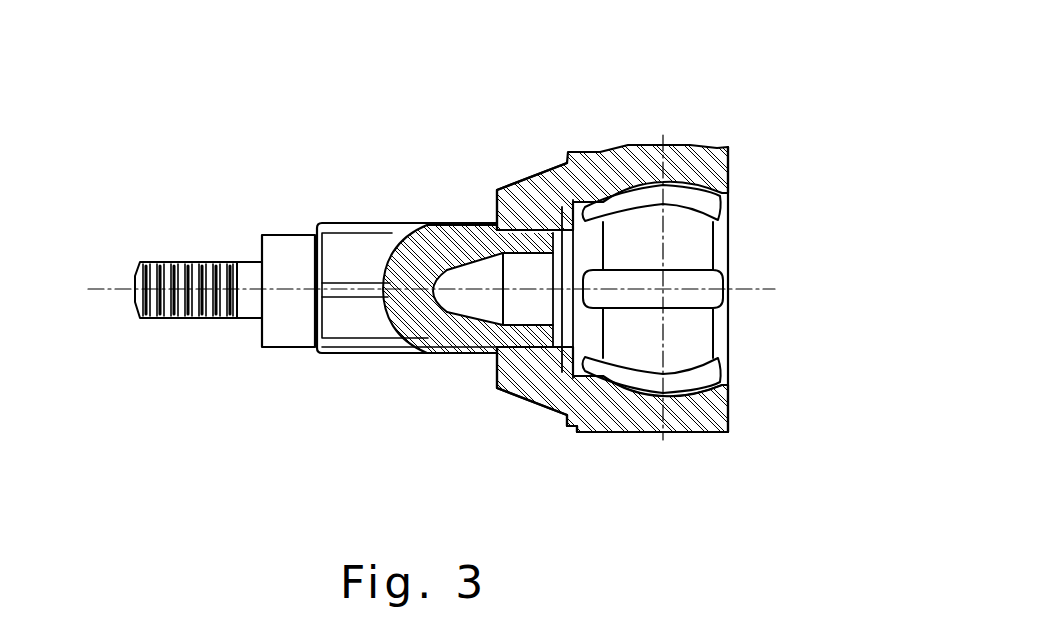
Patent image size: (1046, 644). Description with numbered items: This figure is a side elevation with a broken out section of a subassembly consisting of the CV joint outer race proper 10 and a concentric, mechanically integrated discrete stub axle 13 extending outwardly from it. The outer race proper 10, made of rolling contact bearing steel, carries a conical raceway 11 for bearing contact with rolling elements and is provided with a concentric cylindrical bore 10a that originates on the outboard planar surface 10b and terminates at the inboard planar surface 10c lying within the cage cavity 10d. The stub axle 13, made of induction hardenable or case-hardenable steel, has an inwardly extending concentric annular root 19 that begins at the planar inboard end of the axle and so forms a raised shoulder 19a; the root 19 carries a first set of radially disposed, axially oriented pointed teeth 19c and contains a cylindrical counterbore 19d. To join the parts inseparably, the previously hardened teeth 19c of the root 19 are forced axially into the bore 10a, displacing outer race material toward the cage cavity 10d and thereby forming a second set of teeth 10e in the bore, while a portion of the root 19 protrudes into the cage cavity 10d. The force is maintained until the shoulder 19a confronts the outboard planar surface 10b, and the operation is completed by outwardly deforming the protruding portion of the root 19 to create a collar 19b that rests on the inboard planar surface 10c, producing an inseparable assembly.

The CV joint outer race proper 10 is at (731, 156).
The concentric cylindrical bore 10a is at (520, 357).
The outboard planar surface 10b is at (473, 190).
The inboard planar surface 10c is at (585, 352).
The cage cavity 10d is at (688, 345).
The second set of teeth 10e is at (572, 423).
The conical raceway 11 is at (533, 403).
The stub axle 13 is at (130, 276).
The annular root 19 is at (538, 233).
The raised shoulder 19a is at (478, 348).
The collar 19b is at (575, 240).
The first set of pointed teeth 19c is at (440, 291).
The cylindrical counterbore 19d is at (525, 315).